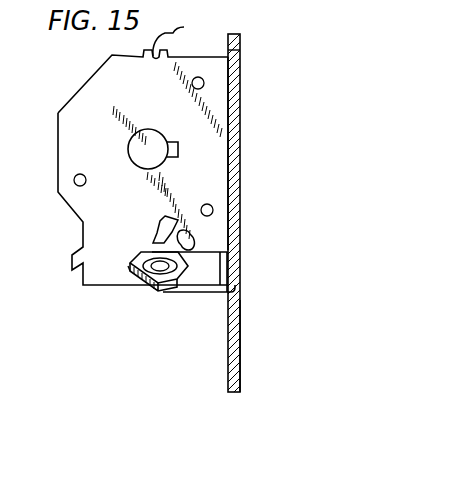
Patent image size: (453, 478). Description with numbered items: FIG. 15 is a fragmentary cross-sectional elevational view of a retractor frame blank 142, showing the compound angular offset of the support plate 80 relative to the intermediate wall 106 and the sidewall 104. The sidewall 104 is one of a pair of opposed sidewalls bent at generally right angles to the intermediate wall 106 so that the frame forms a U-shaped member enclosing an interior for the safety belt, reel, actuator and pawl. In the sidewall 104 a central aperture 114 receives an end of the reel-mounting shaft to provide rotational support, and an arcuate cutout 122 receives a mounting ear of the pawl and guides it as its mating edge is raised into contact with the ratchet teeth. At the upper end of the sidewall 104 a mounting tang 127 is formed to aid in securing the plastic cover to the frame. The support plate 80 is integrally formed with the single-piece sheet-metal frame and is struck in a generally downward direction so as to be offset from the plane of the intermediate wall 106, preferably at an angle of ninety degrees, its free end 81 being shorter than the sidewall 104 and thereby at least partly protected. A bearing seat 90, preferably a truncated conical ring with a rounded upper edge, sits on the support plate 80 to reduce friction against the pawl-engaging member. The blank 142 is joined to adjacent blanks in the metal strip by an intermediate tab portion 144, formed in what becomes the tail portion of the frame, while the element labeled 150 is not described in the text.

The sidewall 104 is at (77, 116).
The central aperture 114 is at (168, 108).
The mounting tang 127 is at (189, 23).
The intermediate wall 106 is at (237, 143).
The upper end cap 150 is at (242, 40).
The retractor frame blank 142 is at (222, 183).
The intermediate portion 144 is at (268, 341).
The arcuate cutout 122 is at (165, 217).
The support plate 80 is at (214, 273).
The bearing seat 90 is at (168, 288).
The free end 81 is at (128, 268).